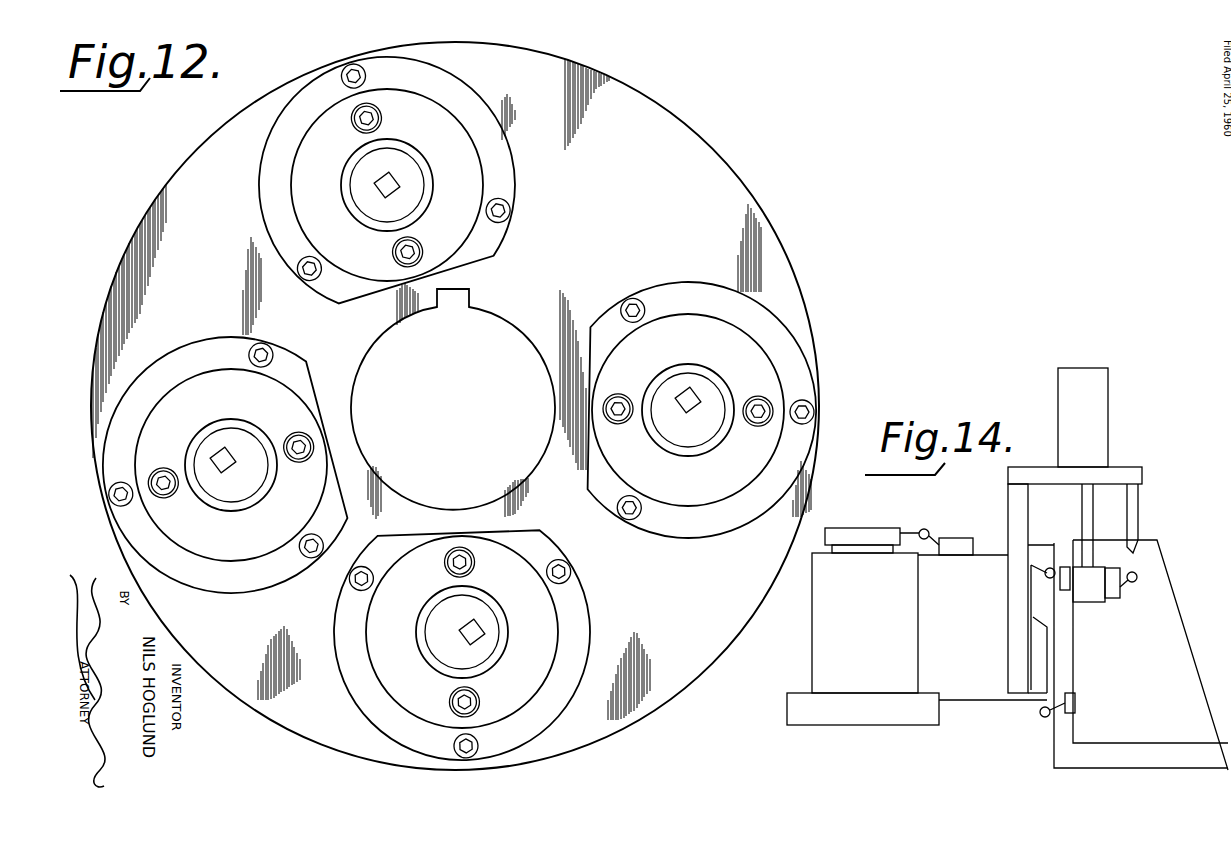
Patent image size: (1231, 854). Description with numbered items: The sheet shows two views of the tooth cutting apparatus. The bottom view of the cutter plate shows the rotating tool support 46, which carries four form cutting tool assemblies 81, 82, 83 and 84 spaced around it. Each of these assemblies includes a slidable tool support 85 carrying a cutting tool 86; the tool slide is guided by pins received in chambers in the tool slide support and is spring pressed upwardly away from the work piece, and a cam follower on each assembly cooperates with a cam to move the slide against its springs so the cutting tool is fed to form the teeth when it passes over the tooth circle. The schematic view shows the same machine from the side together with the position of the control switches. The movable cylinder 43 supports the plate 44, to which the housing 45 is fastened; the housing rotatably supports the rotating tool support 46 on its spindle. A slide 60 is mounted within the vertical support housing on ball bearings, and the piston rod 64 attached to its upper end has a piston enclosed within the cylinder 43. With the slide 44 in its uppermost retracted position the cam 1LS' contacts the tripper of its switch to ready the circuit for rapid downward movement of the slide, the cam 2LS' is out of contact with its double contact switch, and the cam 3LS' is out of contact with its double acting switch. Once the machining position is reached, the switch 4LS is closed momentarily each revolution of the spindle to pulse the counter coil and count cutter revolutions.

In FIG. 12, the rotating tool support 46 is at (752, 187).
In FIG. 12, the form cutting tool assembly 81 is at (778, 387).
In FIG. 12, the form cutting tool assembly 82 is at (338, 114).
In FIG. 12, the form cutting tool assembly 83 is at (158, 524).
In FIG. 12, the form cutting tool assembly 84 is at (440, 728).
In FIG. 12, the slidable tool support 85 is at (763, 366).
In FIG. 12, the cutting tool 86 is at (692, 393).
In FIG. 14, the movable cylinder 43 is at (1108, 412).
In FIG. 14, the plate 44 is at (1125, 465).
In FIG. 14, the piston rod 64 is at (1084, 516).
In FIG. 14, the counter switch 4LS is at (970, 520).
In FIG. 14, the cam 1LS' is at (1019, 577).
In FIG. 14, the cam 3LS' is at (1145, 600).
In FIG. 14, the slide 60 is at (1098, 600).
In FIG. 14, the housing 45 is at (822, 668).
In FIG. 14, the cam 2LS' is at (1036, 712).